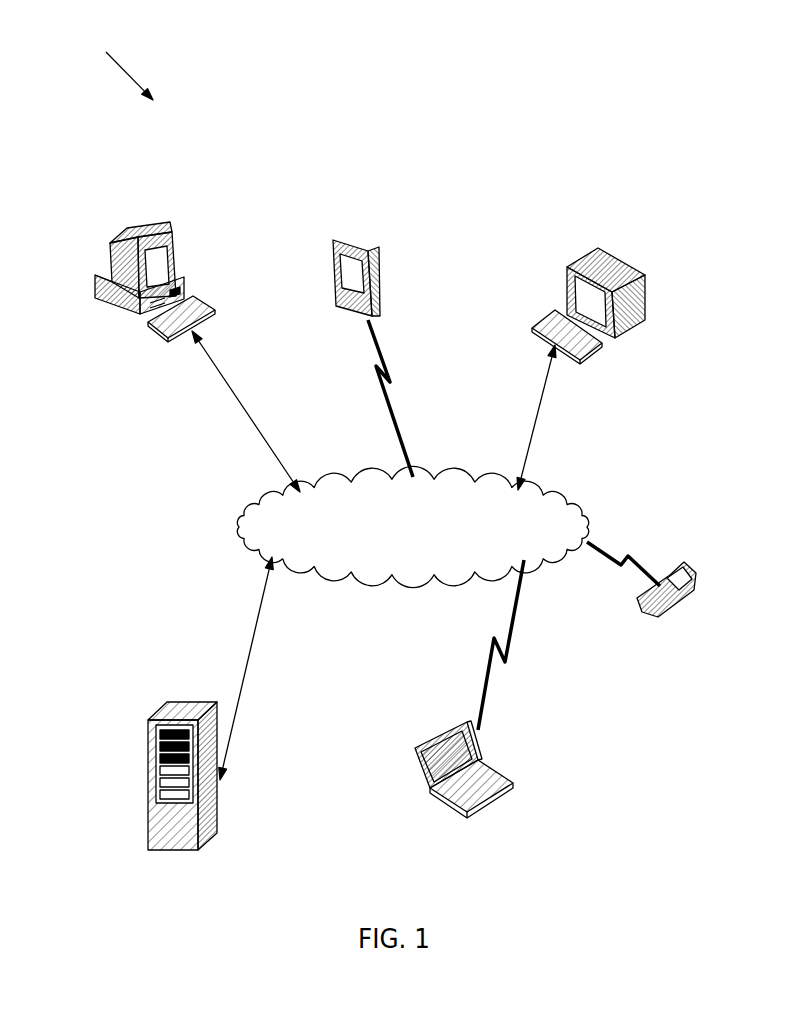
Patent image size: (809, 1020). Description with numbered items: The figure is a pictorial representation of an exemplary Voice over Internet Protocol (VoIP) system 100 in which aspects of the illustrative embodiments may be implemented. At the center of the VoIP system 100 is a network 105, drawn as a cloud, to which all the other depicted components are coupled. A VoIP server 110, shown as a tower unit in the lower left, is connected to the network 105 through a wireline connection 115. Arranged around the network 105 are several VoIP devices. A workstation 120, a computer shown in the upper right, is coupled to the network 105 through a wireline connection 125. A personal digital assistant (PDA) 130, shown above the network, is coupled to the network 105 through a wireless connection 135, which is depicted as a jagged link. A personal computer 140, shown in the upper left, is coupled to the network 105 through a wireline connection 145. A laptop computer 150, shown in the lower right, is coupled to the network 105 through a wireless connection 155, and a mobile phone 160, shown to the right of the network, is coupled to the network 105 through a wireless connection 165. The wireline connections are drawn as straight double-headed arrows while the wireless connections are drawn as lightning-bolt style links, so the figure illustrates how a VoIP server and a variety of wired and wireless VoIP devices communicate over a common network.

The Voice over Internet Protocol (VoIP) system 100 is at (111, 63).
The network 105 is at (585, 507).
The VoIP server 110 is at (190, 700).
The wireline connection 115 is at (253, 645).
The workstation 120 is at (635, 267).
The wireline connection 125 is at (538, 428).
The personal digital assistant (PDA) 130 is at (371, 251).
The wireless connection 135 is at (402, 435).
The personal computer 140 is at (176, 242).
The wireline connection 145 is at (247, 410).
The laptop computer 150 is at (507, 768).
The wireless connection 155 is at (486, 680).
The mobile phone 160 is at (698, 571).
The wireless connection 165 is at (610, 558).